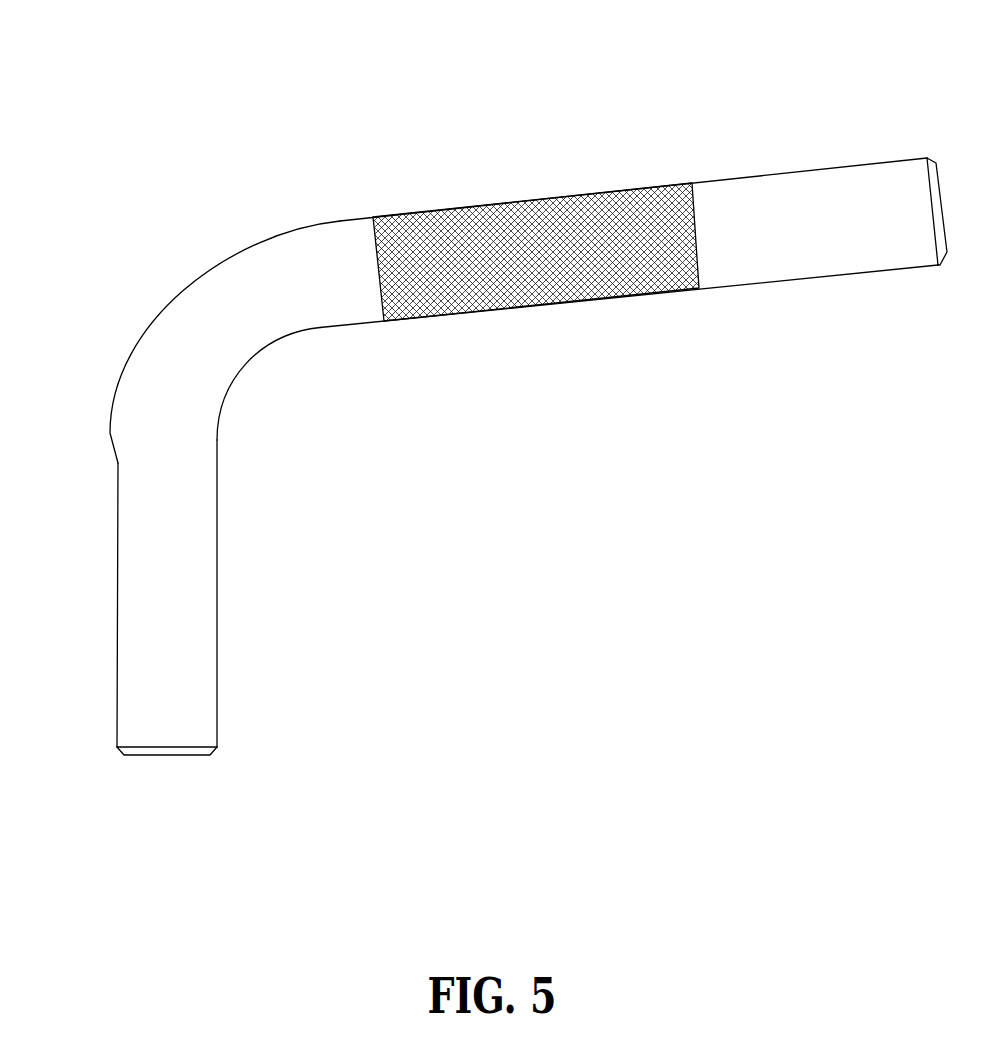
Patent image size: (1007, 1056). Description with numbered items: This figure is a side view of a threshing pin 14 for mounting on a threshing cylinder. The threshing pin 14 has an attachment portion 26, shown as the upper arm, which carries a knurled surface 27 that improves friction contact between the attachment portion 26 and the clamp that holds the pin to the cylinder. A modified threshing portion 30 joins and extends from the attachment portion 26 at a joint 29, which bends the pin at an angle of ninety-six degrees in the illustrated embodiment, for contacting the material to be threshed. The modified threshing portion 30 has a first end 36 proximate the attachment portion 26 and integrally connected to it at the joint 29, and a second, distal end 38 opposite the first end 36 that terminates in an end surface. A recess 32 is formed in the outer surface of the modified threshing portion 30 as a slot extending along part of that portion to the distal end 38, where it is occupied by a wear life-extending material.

The threshing pin 14 is at (198, 75).
The attachment portion 26 is at (434, 164).
The knurled surface 27 is at (564, 222).
The joint 29 is at (213, 305).
The modified threshing portion 30 is at (86, 521).
The recess 32 is at (117, 585).
The first end 36 is at (167, 425).
The distal end 38 is at (175, 757).